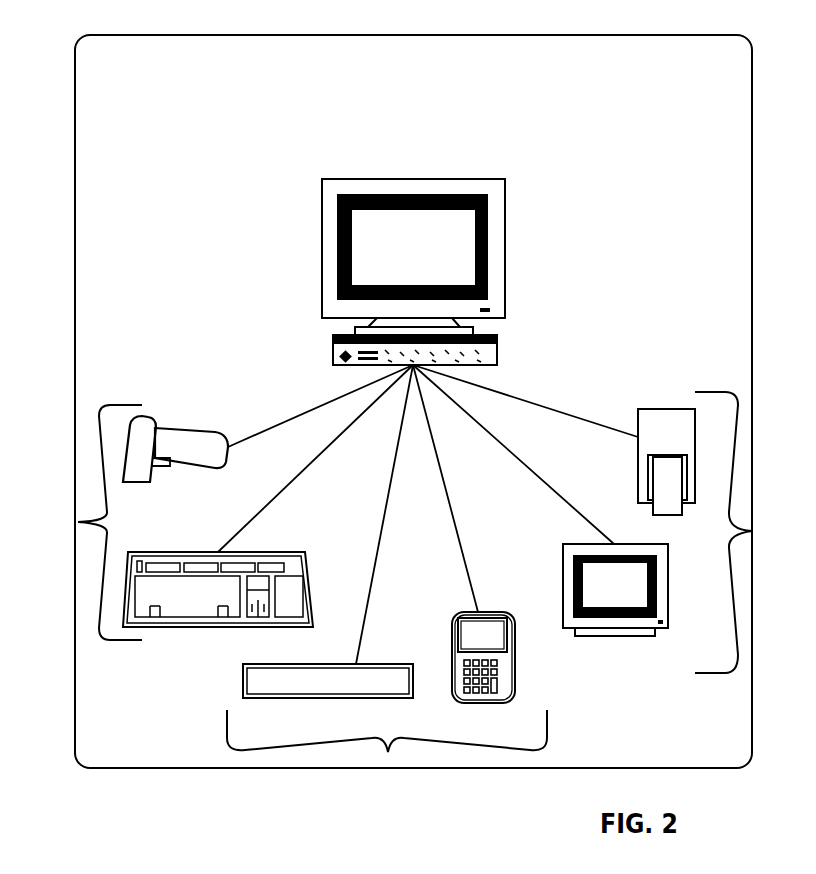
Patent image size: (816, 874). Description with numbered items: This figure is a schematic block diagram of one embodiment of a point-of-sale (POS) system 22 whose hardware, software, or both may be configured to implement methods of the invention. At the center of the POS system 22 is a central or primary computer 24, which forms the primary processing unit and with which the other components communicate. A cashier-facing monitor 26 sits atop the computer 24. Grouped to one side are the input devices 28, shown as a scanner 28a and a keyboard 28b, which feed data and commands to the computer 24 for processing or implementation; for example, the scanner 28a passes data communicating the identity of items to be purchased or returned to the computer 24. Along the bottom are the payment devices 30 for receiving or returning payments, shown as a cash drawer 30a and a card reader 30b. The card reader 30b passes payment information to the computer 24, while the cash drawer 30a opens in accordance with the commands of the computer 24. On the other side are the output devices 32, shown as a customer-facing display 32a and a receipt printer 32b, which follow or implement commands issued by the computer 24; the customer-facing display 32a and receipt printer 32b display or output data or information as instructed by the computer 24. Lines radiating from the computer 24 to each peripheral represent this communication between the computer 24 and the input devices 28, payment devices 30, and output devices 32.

The POS system 22 is at (587, 104).
The computer 24 is at (513, 333).
The monitor 26 is at (306, 215).
The input devices 28 is at (78, 522).
The scanner 28a is at (188, 448).
The keyboard 28b is at (283, 562).
The payment devices 30 is at (388, 753).
The cash drawer 30a is at (330, 683).
The card reader 30b is at (472, 612).
The output devices 32 is at (752, 531).
The customer-facing display 32a is at (612, 598).
The receipt printer 32b is at (657, 430).